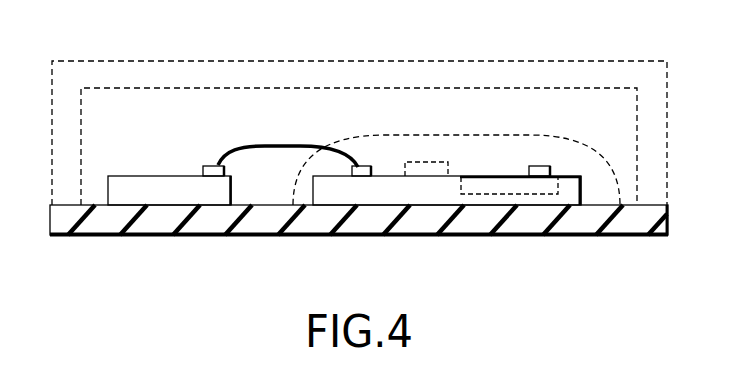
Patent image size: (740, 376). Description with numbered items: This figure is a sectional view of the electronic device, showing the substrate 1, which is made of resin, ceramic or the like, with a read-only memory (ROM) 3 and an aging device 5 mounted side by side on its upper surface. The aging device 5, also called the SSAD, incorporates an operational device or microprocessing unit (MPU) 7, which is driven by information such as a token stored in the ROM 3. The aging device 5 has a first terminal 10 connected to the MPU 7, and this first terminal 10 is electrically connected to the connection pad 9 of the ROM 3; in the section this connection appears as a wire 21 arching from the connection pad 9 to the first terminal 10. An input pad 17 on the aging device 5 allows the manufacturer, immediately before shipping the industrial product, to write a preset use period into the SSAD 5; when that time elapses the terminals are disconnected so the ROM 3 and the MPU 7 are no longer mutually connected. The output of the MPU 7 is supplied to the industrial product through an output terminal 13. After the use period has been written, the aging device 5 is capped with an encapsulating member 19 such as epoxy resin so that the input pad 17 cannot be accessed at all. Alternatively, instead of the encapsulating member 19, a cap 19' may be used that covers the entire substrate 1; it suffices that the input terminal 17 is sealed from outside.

The substrate 1 is at (622, 212).
The read-only memory (ROM) 3 is at (157, 196).
The aging device 5 is at (408, 196).
The microprocessing unit (MPU) 7 is at (478, 196).
The connection pad 9 is at (214, 172).
The first terminal 10 is at (361, 176).
The output terminal 13 is at (540, 172).
The input pad 17 is at (420, 162).
The encapsulating member 19 is at (456, 110).
The cap 19' is at (359, 102).
The bonding wire 21 is at (263, 146).